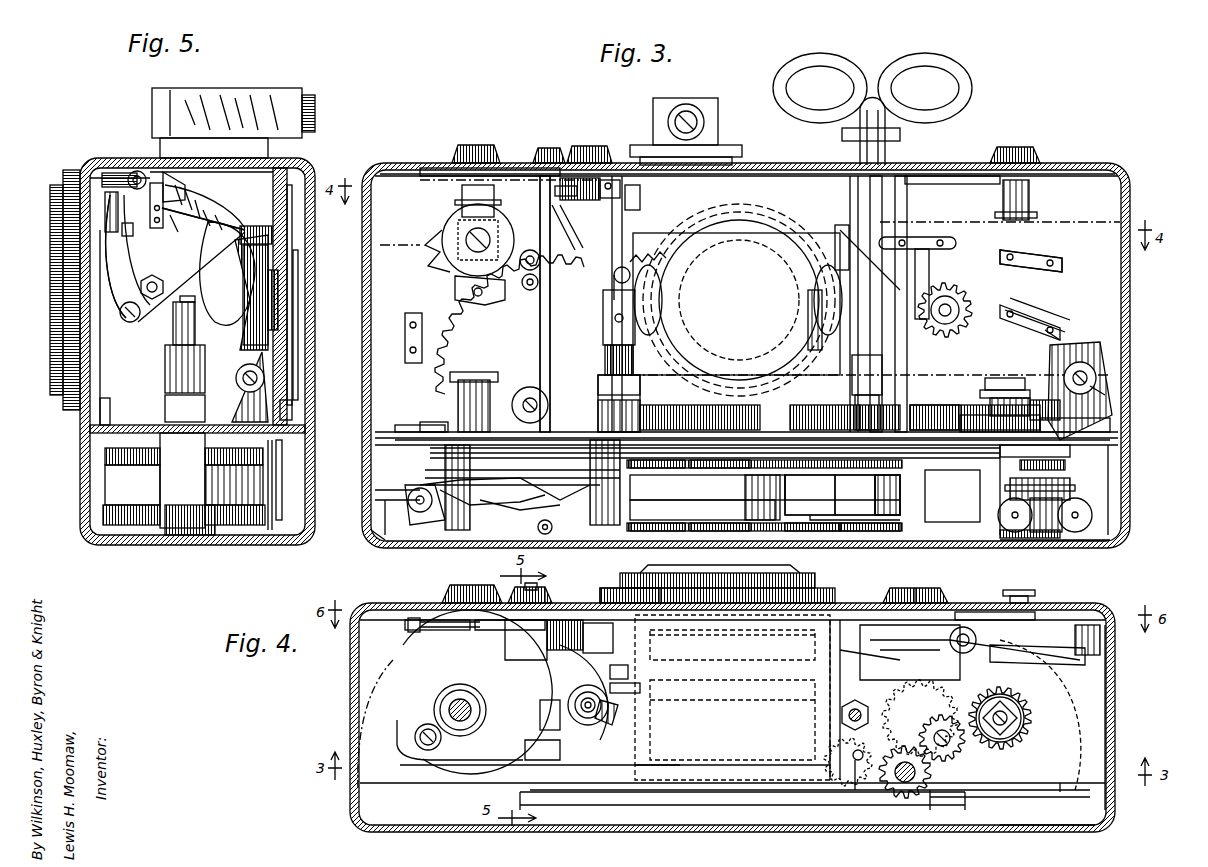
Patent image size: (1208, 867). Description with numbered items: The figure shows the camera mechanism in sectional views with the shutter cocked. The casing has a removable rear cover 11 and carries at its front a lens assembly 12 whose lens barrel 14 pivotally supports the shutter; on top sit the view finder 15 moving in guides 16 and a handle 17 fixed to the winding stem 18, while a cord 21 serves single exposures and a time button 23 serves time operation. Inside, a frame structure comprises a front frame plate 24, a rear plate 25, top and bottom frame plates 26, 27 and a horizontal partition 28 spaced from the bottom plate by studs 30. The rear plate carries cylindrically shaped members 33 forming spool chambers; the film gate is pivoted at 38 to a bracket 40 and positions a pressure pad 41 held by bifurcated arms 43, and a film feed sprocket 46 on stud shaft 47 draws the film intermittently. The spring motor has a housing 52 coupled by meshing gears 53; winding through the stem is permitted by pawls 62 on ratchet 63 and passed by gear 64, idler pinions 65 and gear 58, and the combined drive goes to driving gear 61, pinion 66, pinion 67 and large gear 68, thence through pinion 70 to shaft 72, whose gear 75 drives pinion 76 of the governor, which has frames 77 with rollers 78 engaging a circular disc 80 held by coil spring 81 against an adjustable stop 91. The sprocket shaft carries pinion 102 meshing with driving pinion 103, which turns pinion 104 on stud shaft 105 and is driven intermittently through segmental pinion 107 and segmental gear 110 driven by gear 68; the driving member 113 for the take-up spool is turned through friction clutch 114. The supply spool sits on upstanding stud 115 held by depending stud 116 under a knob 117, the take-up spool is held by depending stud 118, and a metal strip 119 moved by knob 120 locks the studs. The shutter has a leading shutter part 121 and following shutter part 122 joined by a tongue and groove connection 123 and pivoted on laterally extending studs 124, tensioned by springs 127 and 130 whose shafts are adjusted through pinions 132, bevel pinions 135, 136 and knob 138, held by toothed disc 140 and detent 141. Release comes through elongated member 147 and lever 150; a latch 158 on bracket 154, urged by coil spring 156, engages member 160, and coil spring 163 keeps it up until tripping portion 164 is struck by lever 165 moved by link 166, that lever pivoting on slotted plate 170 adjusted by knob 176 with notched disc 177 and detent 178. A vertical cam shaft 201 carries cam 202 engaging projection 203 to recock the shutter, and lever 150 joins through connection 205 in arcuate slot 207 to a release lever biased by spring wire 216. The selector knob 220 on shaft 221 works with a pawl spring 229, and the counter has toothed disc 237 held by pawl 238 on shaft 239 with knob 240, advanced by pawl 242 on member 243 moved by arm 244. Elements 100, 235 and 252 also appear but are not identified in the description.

In FIG. 4, the rear cover 11 is at (1116, 808).
In FIG. 5, the lens assembly 12 is at (84, 152).
In FIG. 4, the lens assembly 12 is at (840, 592).
In FIG. 3, the lens barrel 14 is at (820, 305).
In FIG. 5, the view finder 15 is at (240, 97).
In FIG. 3, the view finder 15 is at (688, 98).
In FIG. 5, the guides 16 is at (236, 150).
In FIG. 3, the handle 17 is at (950, 66).
In FIG. 4, the handle 17 is at (838, 715).
In FIG. 3, the stem 18 is at (898, 137).
In FIG. 4, the cord 21 is at (527, 586).
In FIG. 4, the time button 23 is at (549, 586).
In FIG. 4, the frame plate 24 is at (598, 600).
In FIG. 5, the rear plate 25 is at (272, 530).
In FIG. 4, the rear plate 25 is at (1068, 790).
In FIG. 3, the top frame plate 26 is at (772, 170).
In FIG. 3, the bottom frame plate 27 is at (385, 540).
In FIG. 3, the horizontal partition 28 is at (1110, 420).
In FIG. 4, the horizontal partition 28 is at (1095, 713).
In FIG. 3, the studs 30 is at (1105, 480).
In FIG. 4, the cylindrically shaped members 33 is at (390, 673).
In FIG. 5, the film gate pivot 38 is at (292, 407).
In FIG. 5, the bracket 40 is at (283, 475).
In FIG. 5, the pressure pad 41 is at (298, 353).
In FIG. 5, the bifurcated arms 43 is at (292, 334).
In FIG. 3, the film feed sprocket 46 is at (920, 244).
In FIG. 3, the stud shaft 47 is at (912, 398).
In FIG. 5, the spring housing 52 is at (136, 528).
In FIG. 3, the spring housing 52 is at (672, 522).
In FIG. 5, the meshing gears 53 is at (234, 528).
In FIG. 3, the meshing gears 53 is at (720, 522).
In FIG. 3, the gear 58 is at (700, 415).
In FIG. 5, the driving gear 61 is at (105, 455).
In FIG. 3, the driving gear 61 is at (676, 470).
In FIG. 4, the pawls 62 is at (840, 768).
In FIG. 3, the ratchet 63 is at (820, 522).
In FIG. 4, the ratchet 63 is at (840, 740).
In FIG. 3, the gear 64 is at (828, 420).
In FIG. 4, the gear 64 is at (915, 720).
In FIG. 3, the idler pinions 65 is at (790, 420).
In FIG. 3, the pinion 66 is at (800, 470).
In FIG. 3, the pinion 67 is at (858, 522).
In FIG. 3, the large gear 68 is at (840, 470).
In FIG. 3, the pinion 70 is at (885, 470).
In FIG. 4, the shaft 72 is at (975, 605).
In FIG. 4, the gear 75 is at (1030, 592).
In FIG. 3, the pinion 76 is at (1100, 548).
In FIG. 3, the governor frames 77 is at (1080, 518).
In FIG. 3, the rollers 78 is at (1055, 540).
In FIG. 3, the circular disc 80 is at (1060, 495).
In FIG. 3, the coil spring 81 is at (1050, 470).
In FIG. 3, the stop 91 is at (940, 510).
In FIG. 4, the knob 100 is at (900, 590).
In FIG. 3, the pinion 102 is at (945, 405).
In FIG. 4, the pinion 102 is at (930, 772).
In FIG. 3, the driving pinion 103 is at (975, 400).
In FIG. 4, the driving pinion 103 is at (962, 745).
In FIG. 3, the pinion 104 is at (1060, 408).
In FIG. 4, the pinion 104 is at (1030, 730).
In FIG. 3, the stud shaft 105 is at (1025, 400).
In FIG. 3, the segmental pinion 107 is at (1060, 448).
In FIG. 3, the segmental gear 110 is at (740, 462).
In FIG. 3, the driving member 113 is at (1010, 380).
In FIG. 4, the driving member 113 is at (1030, 712).
In FIG. 3, the friction clutch 114 is at (1100, 388).
In FIG. 3, the upstanding stud 115 is at (462, 395).
In FIG. 4, the upstanding stud 115 is at (458, 686).
In FIG. 3, the depending stud 116 is at (465, 195).
In FIG. 3, the knob 117 is at (472, 145).
In FIG. 3, the depending stud 118 is at (1032, 200).
In FIG. 3, the metal strip 119 is at (522, 170).
In FIG. 3, the knob 120 is at (590, 146).
In FIG. 5, the leading shutter part 121 is at (270, 283).
In FIG. 3, the leading shutter part 121 is at (690, 330).
In FIG. 4, the leading shutter part 121 is at (760, 765).
In FIG. 5, the following shutter part 122 is at (208, 205).
In FIG. 3, the following shutter part 122 is at (768, 236).
In FIG. 4, the following shutter part 122 is at (760, 720).
In FIG. 5, the tongue and groove connection 123 is at (272, 238).
In FIG. 3, the tongue and groove connection 123 is at (730, 236).
In FIG. 5, the laterally extending studs 124 is at (132, 322).
In FIG. 3, the laterally extending studs 124 is at (655, 275).
In FIG. 3, the spring 127 is at (820, 315).
In FIG. 3, the spring 130 is at (755, 274).
In FIG. 4, the spring 130 is at (840, 650).
In FIG. 3, the pinion 132 is at (870, 260).
In FIG. 4, the bevel pinion 135 is at (1000, 665).
In FIG. 3, the bevel pinion 136 is at (920, 290).
In FIG. 4, the bevel pinion 136 is at (962, 652).
In FIG. 4, the knob 138 is at (942, 582).
In FIG. 3, the toothed disc 140 is at (968, 305).
In FIG. 3, the detent 141 is at (1000, 270).
In FIG. 4, the detent 141 is at (985, 640).
In FIG. 4, the elongated member 147 is at (745, 628).
In FIG. 5, the lever 150 is at (106, 422).
In FIG. 3, the lever 150 is at (432, 422).
In FIG. 4, the lever 150 is at (510, 722).
In FIG. 5, the bracket 154 is at (165, 401).
In FIG. 3, the bracket 154 is at (658, 395).
In FIG. 5, the coil spring 156 is at (270, 388).
In FIG. 5, the latch 158 is at (176, 188).
In FIG. 3, the latch 158 is at (628, 198).
In FIG. 4, the latch 158 is at (640, 690).
In FIG. 5, the member 160 is at (150, 178).
In FIG. 3, the member 160 is at (630, 184).
In FIG. 4, the member 160 is at (630, 670).
In FIG. 3, the coil spring 163 is at (565, 230).
In FIG. 4, the coil spring 163 is at (548, 648).
In FIG. 5, the tripping portion 164 is at (110, 190).
In FIG. 3, the tripping portion 164 is at (556, 192).
In FIG. 4, the tripping portion 164 is at (505, 628).
In FIG. 3, the lever 165 is at (622, 268).
In FIG. 3, the link 166 is at (628, 288).
In FIG. 3, the slotted plate 170 is at (460, 300).
In FIG. 4, the knob 176 is at (515, 588).
In FIG. 3, the notched disc 177 is at (450, 283).
In FIG. 4, the notched disc 177 is at (437, 628).
In FIG. 3, the detent 178 is at (442, 258).
In FIG. 4, the detent 178 is at (410, 626).
In FIG. 5, the vertical cam shaft 201 is at (166, 365).
In FIG. 3, the vertical cam shaft 201 is at (640, 336).
In FIG. 5, the cam 202 is at (278, 318).
In FIG. 3, the cam 202 is at (645, 318).
In FIG. 4, the cam 202 is at (618, 718).
In FIG. 5, the projection 203 is at (196, 298).
In FIG. 3, the projection 203 is at (655, 295).
In FIG. 4, the connection 205 is at (415, 735).
In FIG. 4, the arcuate slot 207 is at (430, 755).
In FIG. 3, the spring wire 216 is at (722, 470).
In FIG. 3, the selector knob 220 is at (548, 148).
In FIG. 3, the shaft 221 is at (540, 341).
In FIG. 3, the spring 229 is at (400, 445).
In FIG. 3, the sector plate 235 is at (1105, 365).
In FIG. 3, the toothed disc 237 is at (420, 356).
In FIG. 3, the pawl 238 is at (535, 528).
In FIG. 3, the shaft 239 is at (528, 400).
In FIG. 4, the knob 240 is at (447, 590).
In FIG. 3, the pawl 242 is at (440, 512).
In FIG. 3, the member 243 is at (420, 490).
In FIG. 3, the arm 244 is at (505, 490).
In FIG. 4, the roller 252 is at (585, 712).